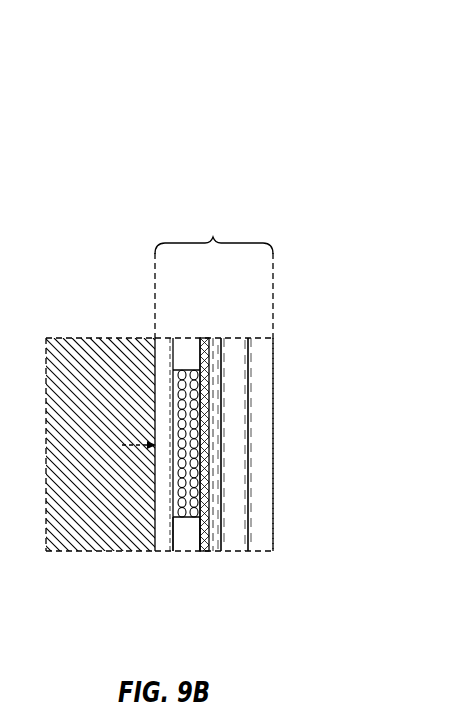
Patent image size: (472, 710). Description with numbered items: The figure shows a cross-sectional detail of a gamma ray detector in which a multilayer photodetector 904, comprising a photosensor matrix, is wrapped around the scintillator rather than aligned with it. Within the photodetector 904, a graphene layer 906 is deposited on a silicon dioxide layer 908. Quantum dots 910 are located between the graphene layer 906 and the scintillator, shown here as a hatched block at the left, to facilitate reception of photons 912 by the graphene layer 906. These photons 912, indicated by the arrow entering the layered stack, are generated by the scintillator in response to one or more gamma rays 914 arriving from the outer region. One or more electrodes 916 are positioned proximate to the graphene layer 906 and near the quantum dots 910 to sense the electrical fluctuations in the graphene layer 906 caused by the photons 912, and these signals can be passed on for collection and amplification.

The multilayer photodetector 904 is at (213, 237).
The graphene layer 906 is at (203, 545).
The silicon dioxide layer 908 is at (213, 545).
The quantum dots 910 is at (163, 345).
The photons 912 is at (80, 350).
The gamma rays 914 is at (263, 397).
The electrodes 916 is at (182, 545).